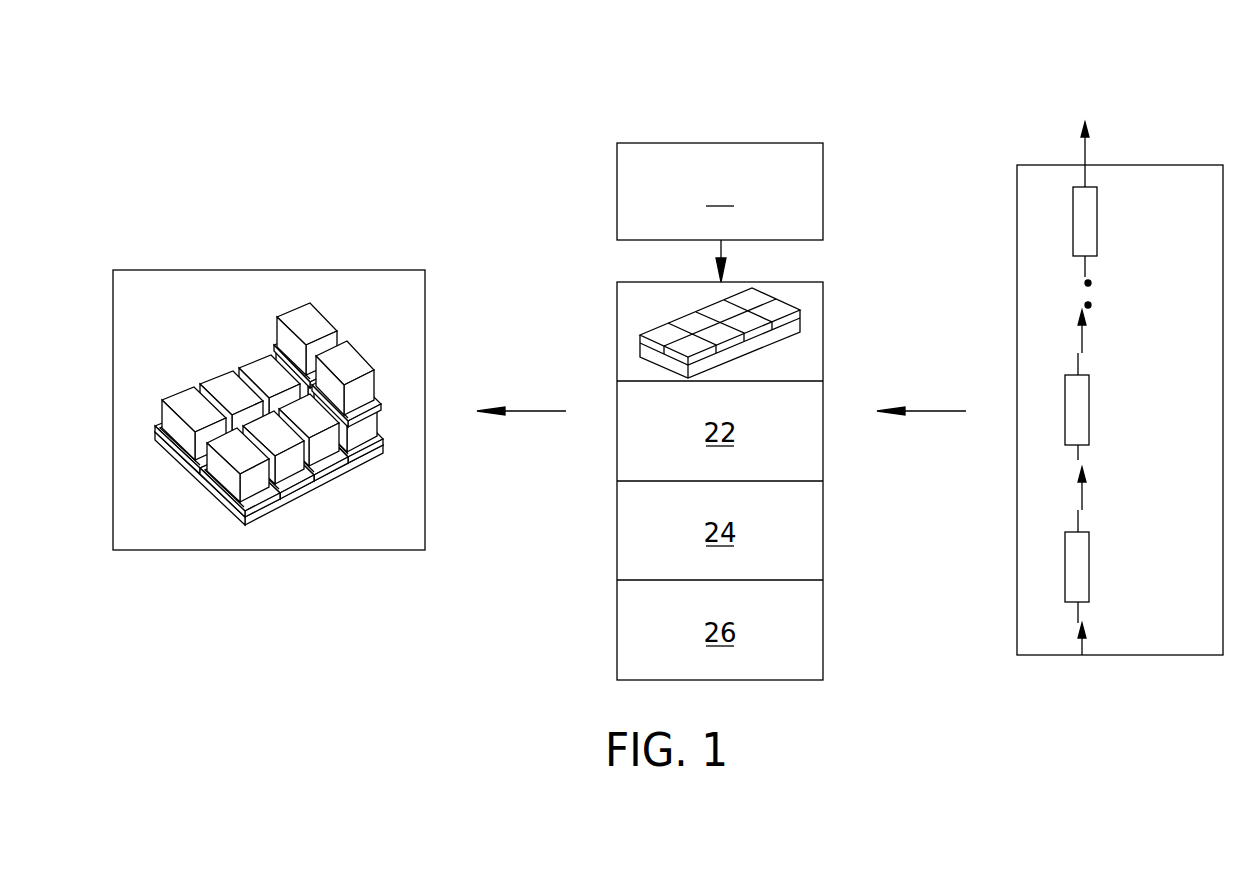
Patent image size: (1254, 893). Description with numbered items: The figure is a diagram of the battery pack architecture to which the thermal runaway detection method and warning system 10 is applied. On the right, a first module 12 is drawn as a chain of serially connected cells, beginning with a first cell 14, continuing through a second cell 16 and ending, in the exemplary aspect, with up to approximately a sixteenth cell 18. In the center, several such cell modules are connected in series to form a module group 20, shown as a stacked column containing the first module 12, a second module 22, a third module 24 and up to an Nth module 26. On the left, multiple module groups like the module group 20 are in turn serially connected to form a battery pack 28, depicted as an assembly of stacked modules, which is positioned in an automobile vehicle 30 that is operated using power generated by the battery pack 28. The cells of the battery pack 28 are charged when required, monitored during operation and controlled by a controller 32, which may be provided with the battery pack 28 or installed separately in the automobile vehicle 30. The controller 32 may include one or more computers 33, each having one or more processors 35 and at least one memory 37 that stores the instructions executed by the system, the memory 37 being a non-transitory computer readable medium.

The thermal runaway detection method and warning system 10 is at (933, 74).
The first module 12 is at (290, 457).
The first cell 14 is at (1083, 220).
The second cell 16 is at (1077, 410).
The sixteenth cell 18 is at (1077, 567).
The module group 20 is at (245, 487).
The second module 22 is at (327, 437).
The third module 24 is at (372, 412).
The Nth module 26 is at (360, 368).
The battery pack 28 is at (348, 350).
The automobile vehicle 30 is at (137, 270).
The controller 32 is at (255, 320).
The computer 33 is at (255, 320).
The processor 35 is at (255, 320).
The memory 37 is at (297, 313).